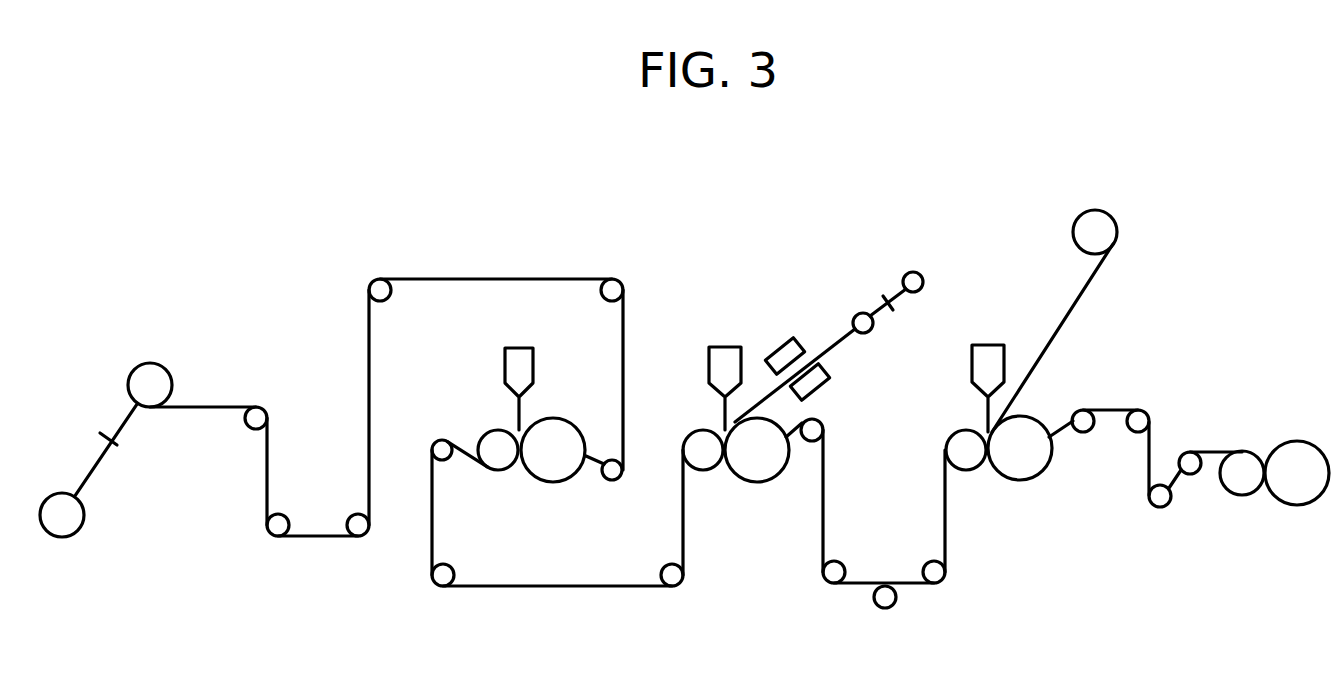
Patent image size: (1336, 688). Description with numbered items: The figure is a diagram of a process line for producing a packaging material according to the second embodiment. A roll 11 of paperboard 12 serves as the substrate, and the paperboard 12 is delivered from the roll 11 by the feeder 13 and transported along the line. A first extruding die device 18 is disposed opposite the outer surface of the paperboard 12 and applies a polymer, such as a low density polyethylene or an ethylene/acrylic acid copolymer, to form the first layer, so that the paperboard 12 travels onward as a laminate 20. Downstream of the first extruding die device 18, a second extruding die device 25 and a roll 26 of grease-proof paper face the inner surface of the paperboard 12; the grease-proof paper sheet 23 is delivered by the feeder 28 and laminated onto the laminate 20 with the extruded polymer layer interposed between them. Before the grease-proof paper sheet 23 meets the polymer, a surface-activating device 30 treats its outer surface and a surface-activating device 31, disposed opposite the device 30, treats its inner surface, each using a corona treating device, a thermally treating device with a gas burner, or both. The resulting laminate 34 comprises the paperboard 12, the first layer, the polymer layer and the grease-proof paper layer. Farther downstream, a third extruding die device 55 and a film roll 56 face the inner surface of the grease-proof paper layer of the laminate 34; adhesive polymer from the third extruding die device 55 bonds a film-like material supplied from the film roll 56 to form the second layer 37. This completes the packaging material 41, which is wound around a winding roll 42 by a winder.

The roll of paperboard 11 is at (150, 363).
The paperboard 12 is at (220, 406).
The feeder 13 is at (80, 531).
The first extruding die device 18 is at (525, 347).
The laminate 20 is at (507, 589).
The grease-proof paper sheet 23 is at (840, 333).
The second extruding die device 25 is at (722, 347).
The roll of grease-proof paper 26 is at (870, 331).
The feeder 28 is at (915, 272).
The surface-activating device 30 is at (777, 345).
The surface-activating device 31 is at (823, 387).
The laminate 34 is at (822, 515).
The second layer 37 is at (1088, 289).
The packaging material 41 is at (1120, 410).
The winding roll 42 is at (1290, 441).
The third extruding die device 55 is at (990, 346).
The film roll 56 is at (1108, 212).